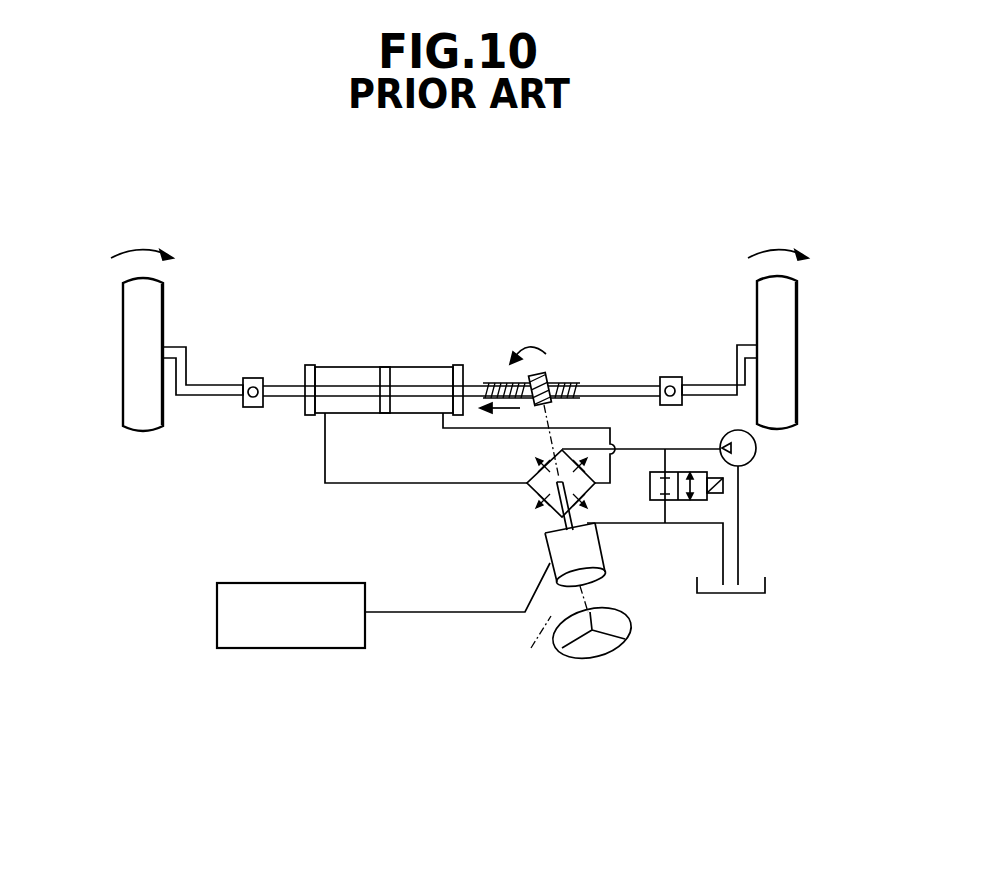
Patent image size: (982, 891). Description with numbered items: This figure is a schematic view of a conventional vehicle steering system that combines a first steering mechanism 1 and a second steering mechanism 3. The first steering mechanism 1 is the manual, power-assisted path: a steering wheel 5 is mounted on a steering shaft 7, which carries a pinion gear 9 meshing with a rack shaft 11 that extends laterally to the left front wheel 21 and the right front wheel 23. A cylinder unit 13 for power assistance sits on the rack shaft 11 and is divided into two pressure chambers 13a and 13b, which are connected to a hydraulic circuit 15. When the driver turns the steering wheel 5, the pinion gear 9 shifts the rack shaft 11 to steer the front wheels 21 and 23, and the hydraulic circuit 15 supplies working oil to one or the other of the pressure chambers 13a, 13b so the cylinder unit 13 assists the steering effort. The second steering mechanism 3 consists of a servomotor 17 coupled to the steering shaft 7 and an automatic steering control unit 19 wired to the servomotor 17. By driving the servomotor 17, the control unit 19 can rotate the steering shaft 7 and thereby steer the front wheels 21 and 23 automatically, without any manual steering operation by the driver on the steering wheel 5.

The first steering mechanism 1 is at (624, 664).
The second steering mechanism 3 is at (208, 616).
The steering wheel 5 is at (580, 660).
The steering shaft 7 is at (583, 597).
The pinion gear 9 is at (546, 374).
The rack shaft 11 is at (497, 383).
The cylinder unit 13 is at (396, 362).
The pressure chamber 13a is at (343, 367).
The pressure chamber 13b is at (441, 367).
The hydraulic circuit 15 is at (755, 505).
The servomotor 17 is at (548, 547).
The automatic steering control unit 19 is at (290, 583).
The left front wheel 21 is at (130, 378).
The right front wheel 23 is at (785, 385).